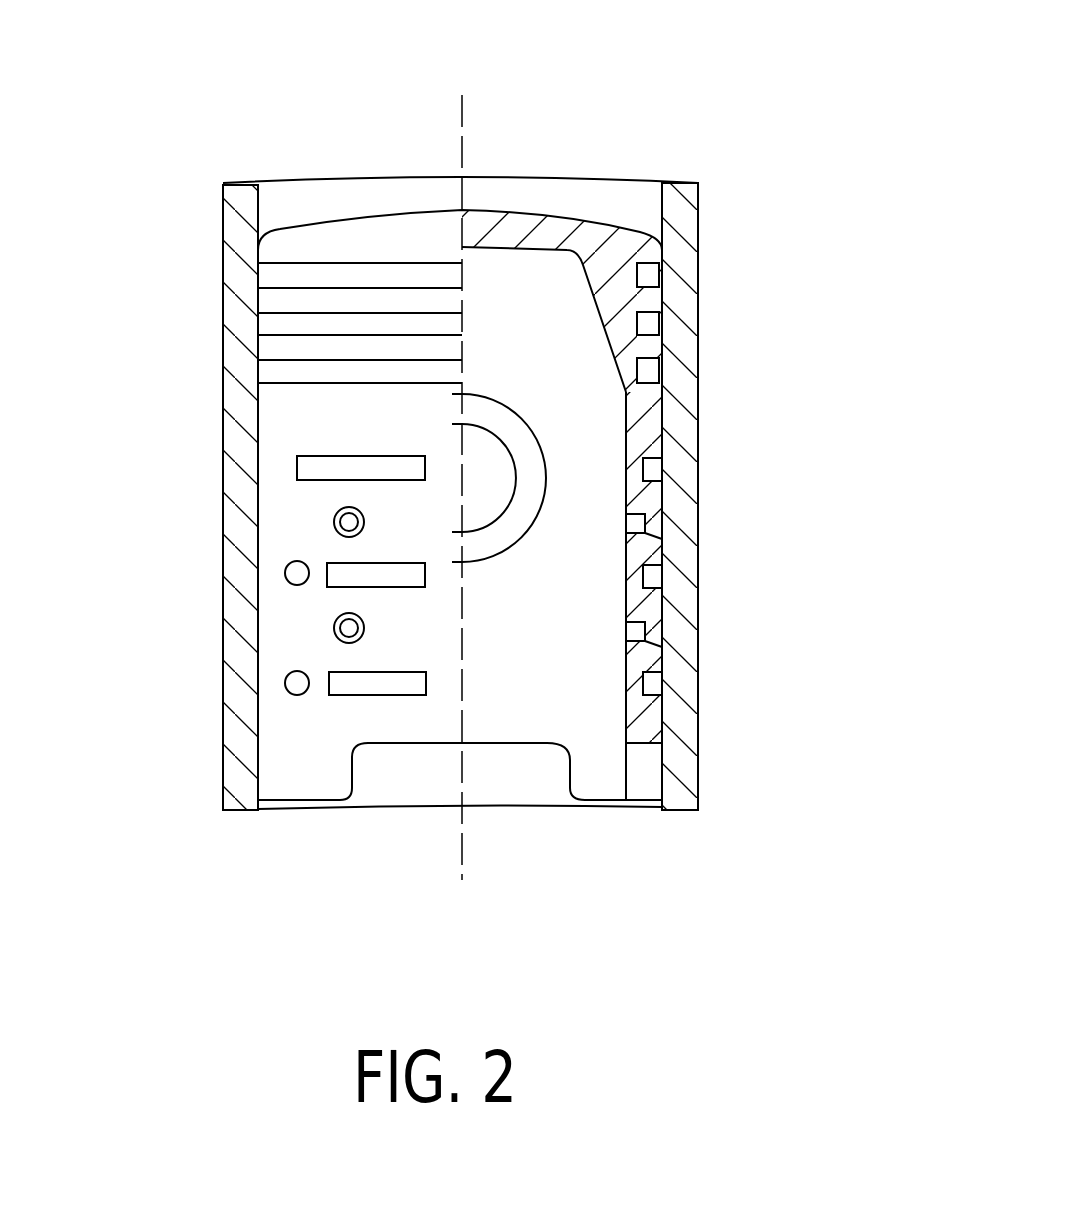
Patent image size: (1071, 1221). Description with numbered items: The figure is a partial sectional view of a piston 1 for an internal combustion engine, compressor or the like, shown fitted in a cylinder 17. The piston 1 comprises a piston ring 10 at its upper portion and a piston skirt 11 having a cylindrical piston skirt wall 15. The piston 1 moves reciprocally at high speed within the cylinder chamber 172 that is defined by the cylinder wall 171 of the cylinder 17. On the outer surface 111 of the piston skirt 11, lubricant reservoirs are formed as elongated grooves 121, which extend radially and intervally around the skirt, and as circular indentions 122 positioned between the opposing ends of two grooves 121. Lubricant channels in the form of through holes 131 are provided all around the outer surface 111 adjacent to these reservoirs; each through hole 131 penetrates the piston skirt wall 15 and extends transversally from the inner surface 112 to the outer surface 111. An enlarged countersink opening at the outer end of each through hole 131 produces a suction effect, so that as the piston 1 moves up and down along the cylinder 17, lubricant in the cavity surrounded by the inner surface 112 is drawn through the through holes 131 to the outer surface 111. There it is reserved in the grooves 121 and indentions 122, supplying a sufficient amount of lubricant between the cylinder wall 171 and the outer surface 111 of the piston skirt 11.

The piston 1 is at (325, 185).
The piston ring 10 is at (310, 312).
The piston skirt 11 is at (385, 712).
The outer surface 111 is at (666, 493).
The inner surface 112 is at (613, 578).
The grooves 121 is at (345, 465).
The indentions 122 is at (297, 683).
The through holes 131 is at (345, 628).
The piston skirt wall 15 is at (646, 735).
The cylinder 17 is at (712, 788).
The cylinder wall 171 is at (682, 232).
The cylinder chamber 172 is at (557, 185).